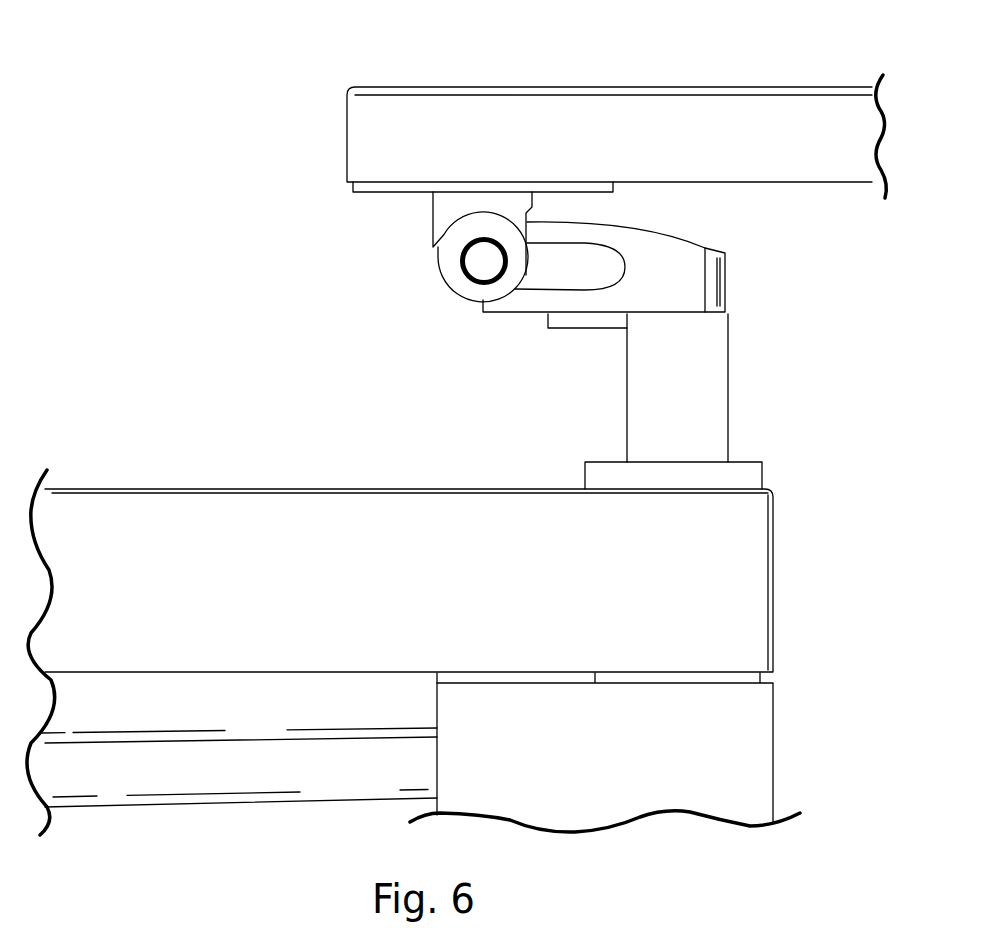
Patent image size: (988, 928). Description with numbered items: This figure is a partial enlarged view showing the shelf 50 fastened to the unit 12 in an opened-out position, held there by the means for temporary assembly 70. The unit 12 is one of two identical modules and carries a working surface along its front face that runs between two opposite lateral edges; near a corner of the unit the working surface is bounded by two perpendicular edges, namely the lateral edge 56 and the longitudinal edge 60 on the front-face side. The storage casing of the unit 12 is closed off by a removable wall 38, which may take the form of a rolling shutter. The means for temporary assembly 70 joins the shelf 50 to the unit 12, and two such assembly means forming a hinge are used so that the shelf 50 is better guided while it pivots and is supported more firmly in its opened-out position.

The shelf 50 is at (758, 88).
The means for temporary assembly 70 is at (477, 340).
The longitudinal edge 60 is at (765, 488).
The lateral edge 56 is at (468, 490).
The unit 12 is at (813, 567).
The removable wall 38 is at (298, 768).